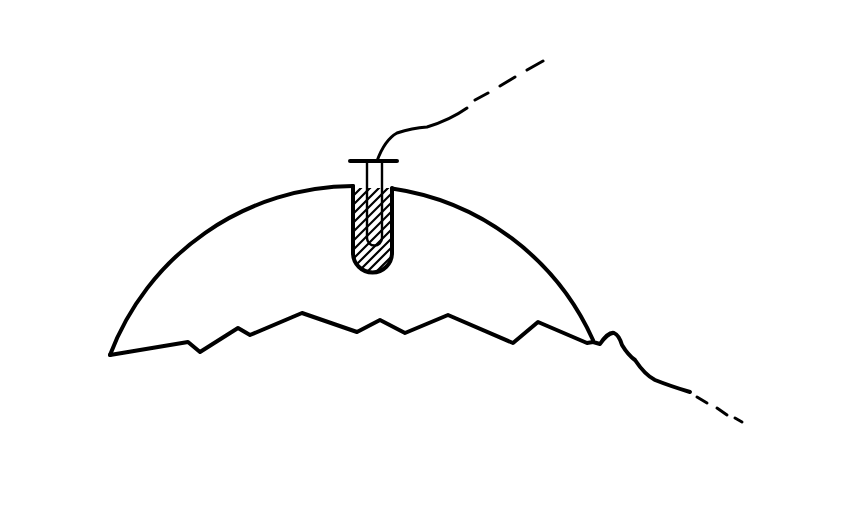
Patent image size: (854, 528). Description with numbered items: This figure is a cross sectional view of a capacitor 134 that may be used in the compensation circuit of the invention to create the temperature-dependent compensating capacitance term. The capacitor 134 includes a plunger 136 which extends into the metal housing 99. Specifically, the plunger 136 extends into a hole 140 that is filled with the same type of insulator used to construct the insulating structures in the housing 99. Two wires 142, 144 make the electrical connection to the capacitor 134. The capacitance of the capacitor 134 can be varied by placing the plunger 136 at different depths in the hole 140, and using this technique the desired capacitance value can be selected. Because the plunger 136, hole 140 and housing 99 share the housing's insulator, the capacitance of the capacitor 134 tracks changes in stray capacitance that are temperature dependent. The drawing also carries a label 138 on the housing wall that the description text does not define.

The capacitor 134 is at (178, 195).
The plunger 136 is at (360, 176).
The dome-shaped cover 138 is at (581, 293).
The hole 140 is at (394, 231).
The wire 142 is at (446, 117).
The wire 144 is at (652, 380).
The metal housing 99 is at (521, 242).